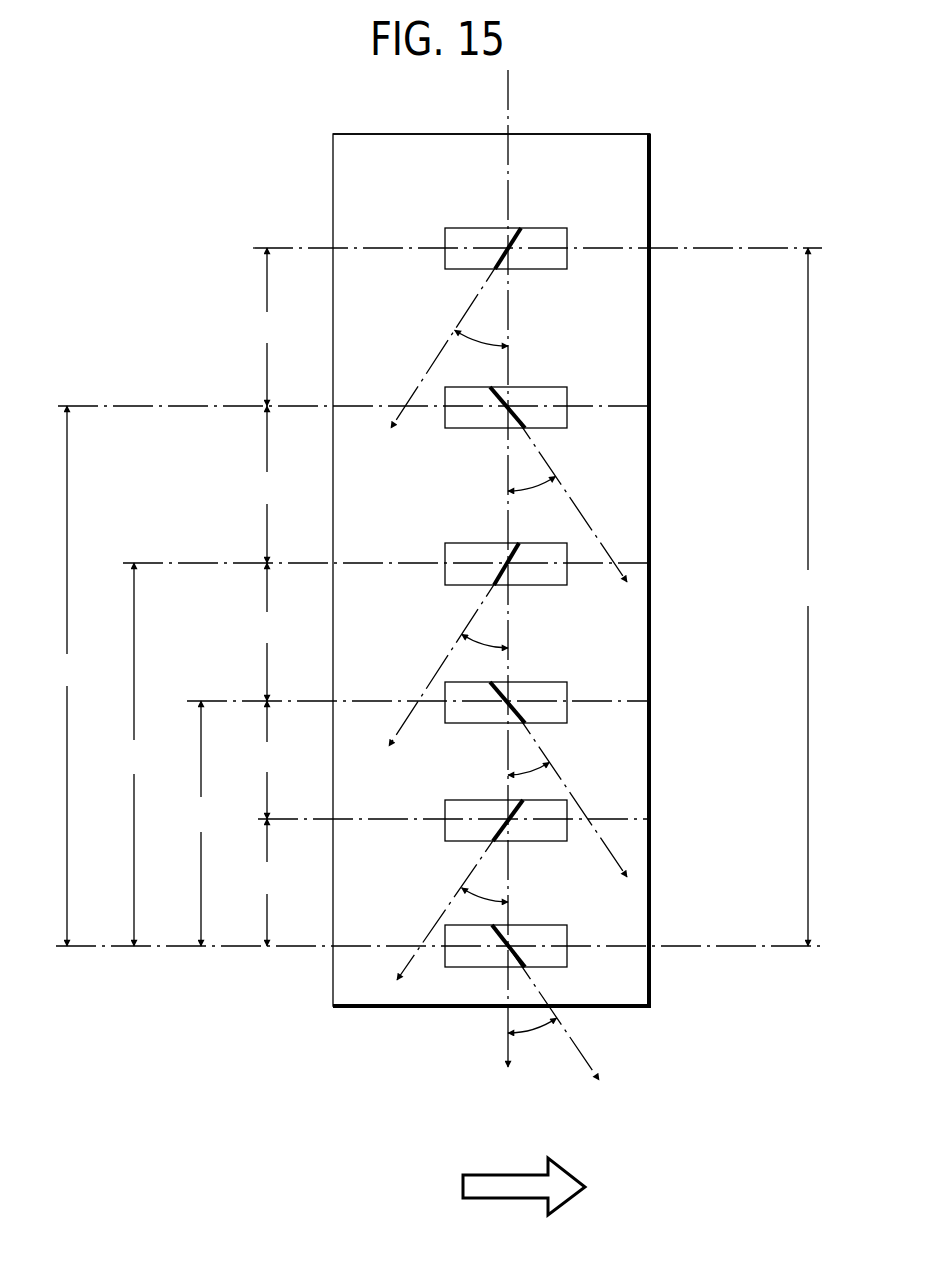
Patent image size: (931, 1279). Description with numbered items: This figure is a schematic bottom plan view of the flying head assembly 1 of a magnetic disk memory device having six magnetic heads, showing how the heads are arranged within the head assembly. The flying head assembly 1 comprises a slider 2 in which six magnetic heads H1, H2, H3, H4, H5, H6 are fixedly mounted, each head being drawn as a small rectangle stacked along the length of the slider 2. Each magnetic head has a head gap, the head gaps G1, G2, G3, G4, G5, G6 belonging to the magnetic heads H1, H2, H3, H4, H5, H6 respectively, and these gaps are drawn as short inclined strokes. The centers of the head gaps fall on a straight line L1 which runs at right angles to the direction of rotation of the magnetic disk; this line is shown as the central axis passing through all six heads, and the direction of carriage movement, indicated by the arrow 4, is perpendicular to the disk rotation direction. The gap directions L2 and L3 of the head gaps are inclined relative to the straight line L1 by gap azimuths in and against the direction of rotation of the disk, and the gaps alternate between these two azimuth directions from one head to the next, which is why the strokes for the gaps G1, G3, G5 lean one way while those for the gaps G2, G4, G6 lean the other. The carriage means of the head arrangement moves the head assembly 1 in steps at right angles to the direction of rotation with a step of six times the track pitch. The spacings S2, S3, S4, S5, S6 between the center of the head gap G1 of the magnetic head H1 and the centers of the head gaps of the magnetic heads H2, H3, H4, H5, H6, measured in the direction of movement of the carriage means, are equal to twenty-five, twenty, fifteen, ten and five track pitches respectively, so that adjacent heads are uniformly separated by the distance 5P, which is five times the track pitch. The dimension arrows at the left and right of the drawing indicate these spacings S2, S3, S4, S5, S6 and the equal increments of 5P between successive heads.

The flying head assembly 1 is at (345, 172).
The slider 2 is at (638, 177).
The scanning direction arrow 4 is at (502, 1175).
The head gap G1 is at (510, 935).
The head gap G2 is at (508, 240).
The head gap G3 is at (502, 393).
The head gap G4 is at (503, 553).
The head gap G5 is at (502, 690).
The head gap G6 is at (505, 820).
The magnetic head H1 is at (560, 953).
The magnetic head H2 is at (562, 239).
The magnetic head H3 is at (560, 396).
The magnetic head H4 is at (545, 575).
The magnetic head H5 is at (558, 695).
The magnetic head H6 is at (547, 832).
The straight line L1 is at (509, 585).
The gap direction L2 is at (577, 753).
The gap direction L3 is at (432, 623).
The spacing S2 is at (810, 597).
The spacing S3 is at (68, 676).
The spacing S4 is at (137, 754).
The spacing S5 is at (202, 823).
The spacing S6 is at (266, 882).
The five track pitches 5P is at (267, 533).